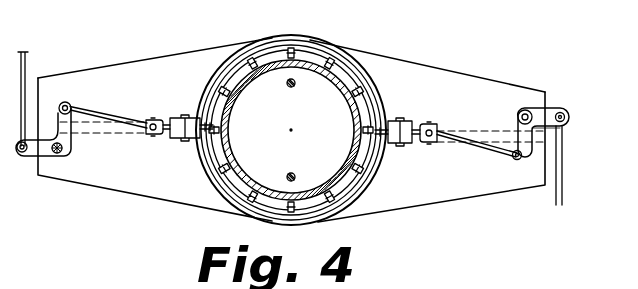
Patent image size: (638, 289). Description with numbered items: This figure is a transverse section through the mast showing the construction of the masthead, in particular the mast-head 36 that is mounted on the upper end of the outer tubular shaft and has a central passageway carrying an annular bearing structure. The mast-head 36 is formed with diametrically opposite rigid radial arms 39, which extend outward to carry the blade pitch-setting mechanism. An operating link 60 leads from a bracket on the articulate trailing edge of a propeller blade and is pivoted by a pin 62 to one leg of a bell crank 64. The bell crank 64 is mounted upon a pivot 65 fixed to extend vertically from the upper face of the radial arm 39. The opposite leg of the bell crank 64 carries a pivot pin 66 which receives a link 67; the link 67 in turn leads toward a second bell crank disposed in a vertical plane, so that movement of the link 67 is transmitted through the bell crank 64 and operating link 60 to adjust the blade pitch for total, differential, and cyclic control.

The mast-head 36 is at (442, 63).
The radial arm 39 is at (291, 121).
The operating link 60 is at (563, 165).
The pin 62 is at (565, 117).
The bell crank 64 is at (545, 123).
The pivot 65 is at (527, 110).
The pivot pin 66 is at (523, 160).
The link 67 is at (473, 148).